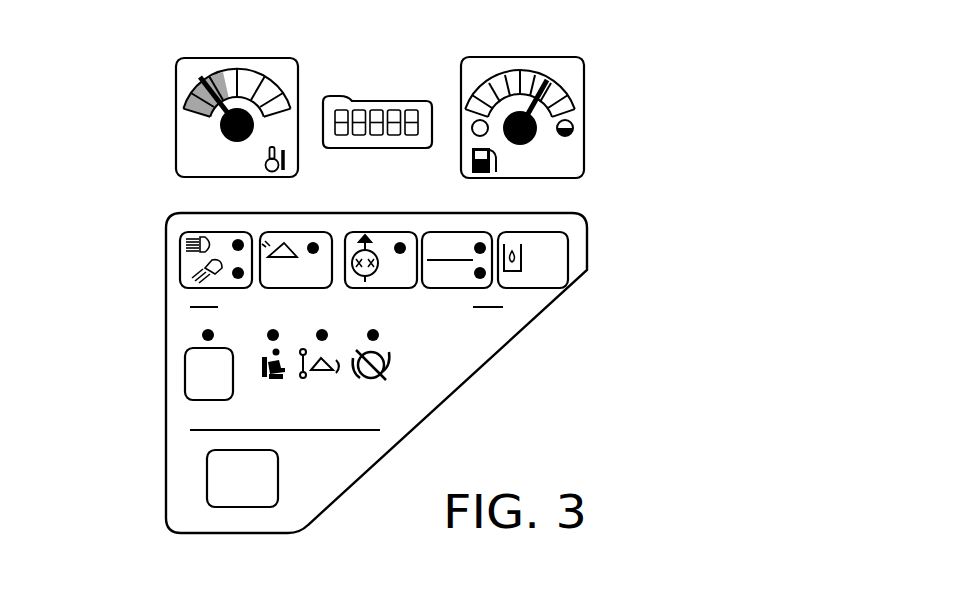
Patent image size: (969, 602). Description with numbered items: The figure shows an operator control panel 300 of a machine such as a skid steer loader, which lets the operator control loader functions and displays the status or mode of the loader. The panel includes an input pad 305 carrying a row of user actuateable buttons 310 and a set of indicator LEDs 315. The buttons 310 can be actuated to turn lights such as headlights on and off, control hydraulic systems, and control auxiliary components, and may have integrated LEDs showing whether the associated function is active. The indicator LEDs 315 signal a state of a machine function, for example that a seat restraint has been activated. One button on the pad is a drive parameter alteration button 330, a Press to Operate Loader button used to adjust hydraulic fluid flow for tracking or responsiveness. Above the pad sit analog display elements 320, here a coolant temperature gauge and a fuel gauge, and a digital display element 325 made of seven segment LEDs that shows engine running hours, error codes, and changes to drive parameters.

The operator control panel 300 is at (118, 206).
The input pad 305 is at (125, 320).
The user actuateable buttons 310 is at (310, 231).
The indicator LEDs 315 is at (388, 335).
The analog display elements 320 is at (249, 49).
The digital display element 325 is at (363, 70).
The drive parameter alteration button 330 is at (185, 375).